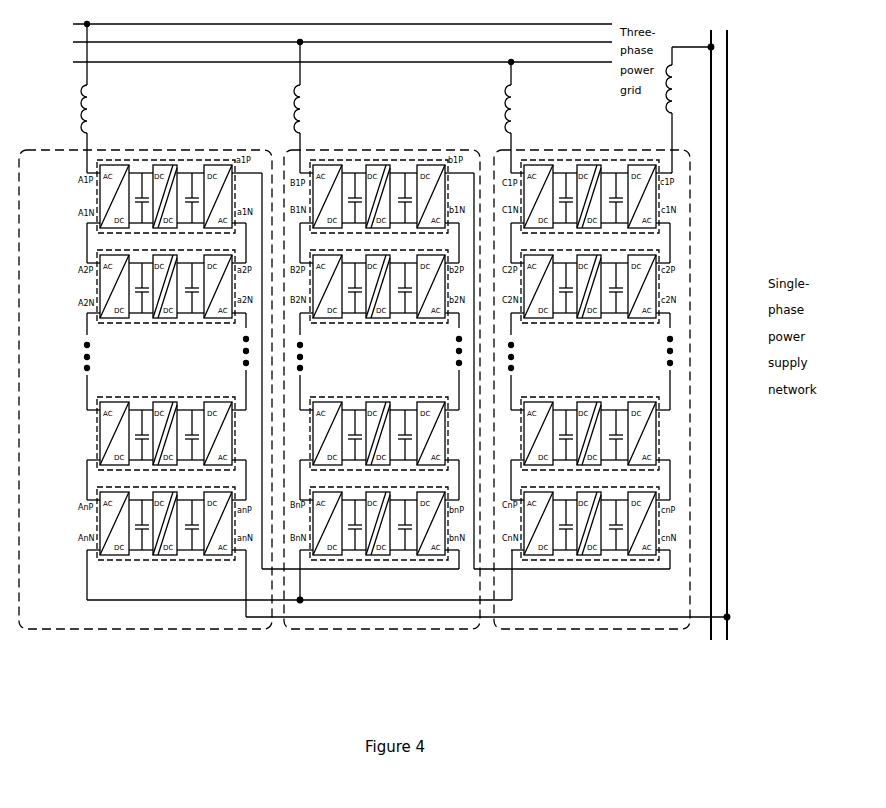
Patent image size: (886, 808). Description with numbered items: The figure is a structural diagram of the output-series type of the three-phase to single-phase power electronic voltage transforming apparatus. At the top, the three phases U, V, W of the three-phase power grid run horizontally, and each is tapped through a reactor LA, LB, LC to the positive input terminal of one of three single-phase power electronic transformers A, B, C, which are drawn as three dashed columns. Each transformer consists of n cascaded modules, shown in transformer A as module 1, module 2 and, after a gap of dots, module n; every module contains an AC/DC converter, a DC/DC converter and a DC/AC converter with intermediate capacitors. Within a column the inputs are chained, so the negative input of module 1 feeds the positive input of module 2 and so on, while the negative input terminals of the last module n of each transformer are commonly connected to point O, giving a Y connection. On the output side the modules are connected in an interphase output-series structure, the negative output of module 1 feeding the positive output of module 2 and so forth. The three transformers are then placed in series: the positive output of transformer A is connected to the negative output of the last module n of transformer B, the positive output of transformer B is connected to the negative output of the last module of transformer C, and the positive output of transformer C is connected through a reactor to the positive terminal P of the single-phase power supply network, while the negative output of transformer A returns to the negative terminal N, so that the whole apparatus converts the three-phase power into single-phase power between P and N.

The module 1 is at (89, 199).
The module 2 is at (89, 287).
The module n is at (89, 522).
The reactor LA is at (99, 98).
The reactor LB is at (311, 107).
The reactor LC is at (523, 117).
The single-phase power electronic transformer A is at (165, 641).
The single-phase power electronic transformer B is at (388, 641).
The single-phase power electronic transformer C is at (604, 641).
The positive terminal of the single-phase power supply network P is at (690, 332).
The negative terminal of the single-phase power supply network N is at (493, 335).
The point O is at (299, 576).
The phase U of the three-phase power network U is at (335, 25).
The phase V of the three-phase power network V is at (335, 43).
The phase W of the three-phase power network W is at (334, 63).